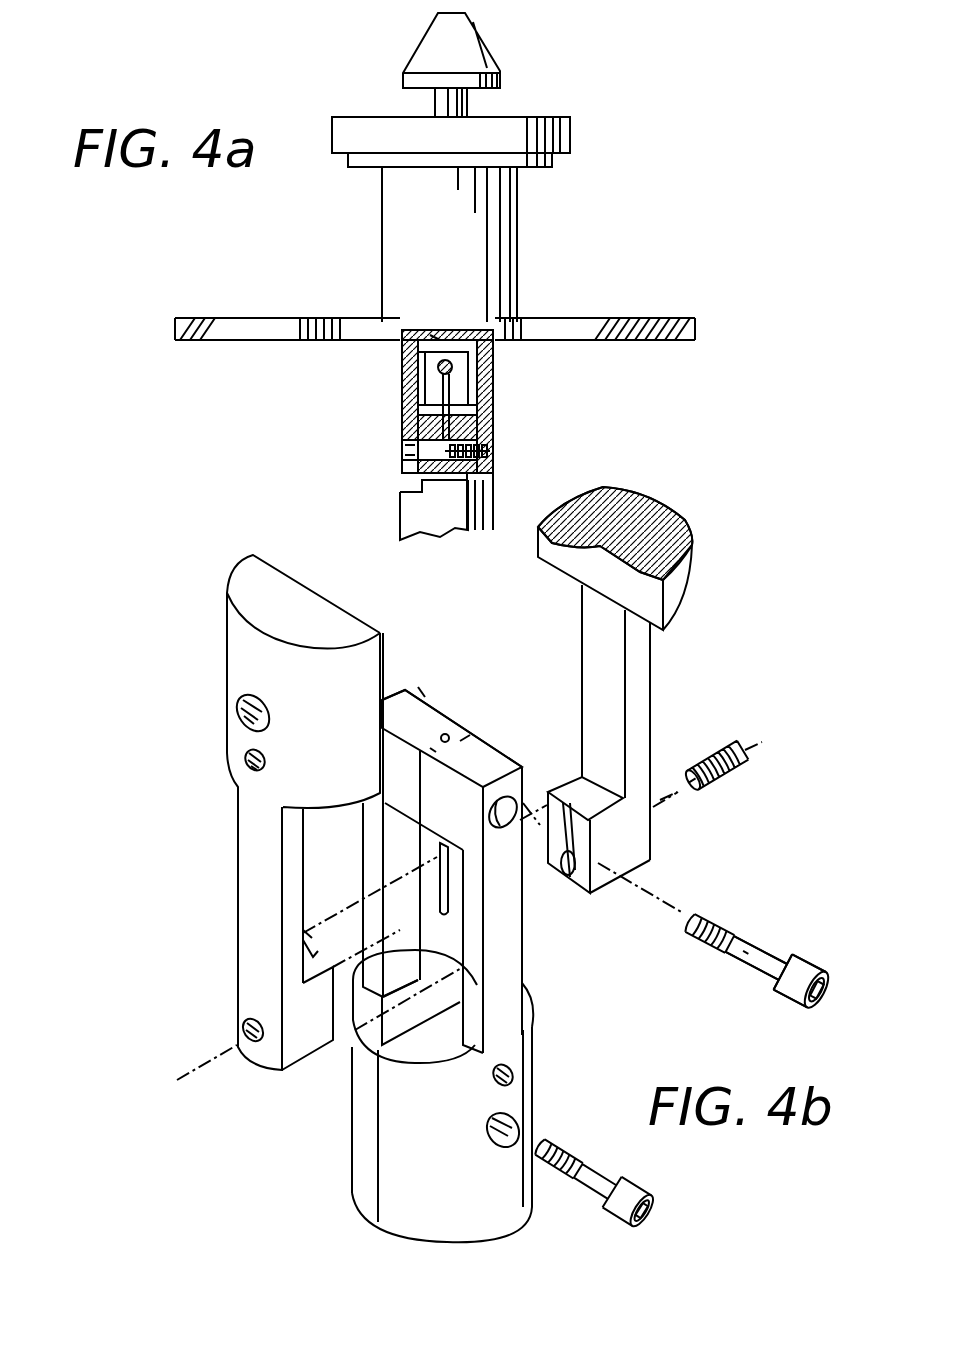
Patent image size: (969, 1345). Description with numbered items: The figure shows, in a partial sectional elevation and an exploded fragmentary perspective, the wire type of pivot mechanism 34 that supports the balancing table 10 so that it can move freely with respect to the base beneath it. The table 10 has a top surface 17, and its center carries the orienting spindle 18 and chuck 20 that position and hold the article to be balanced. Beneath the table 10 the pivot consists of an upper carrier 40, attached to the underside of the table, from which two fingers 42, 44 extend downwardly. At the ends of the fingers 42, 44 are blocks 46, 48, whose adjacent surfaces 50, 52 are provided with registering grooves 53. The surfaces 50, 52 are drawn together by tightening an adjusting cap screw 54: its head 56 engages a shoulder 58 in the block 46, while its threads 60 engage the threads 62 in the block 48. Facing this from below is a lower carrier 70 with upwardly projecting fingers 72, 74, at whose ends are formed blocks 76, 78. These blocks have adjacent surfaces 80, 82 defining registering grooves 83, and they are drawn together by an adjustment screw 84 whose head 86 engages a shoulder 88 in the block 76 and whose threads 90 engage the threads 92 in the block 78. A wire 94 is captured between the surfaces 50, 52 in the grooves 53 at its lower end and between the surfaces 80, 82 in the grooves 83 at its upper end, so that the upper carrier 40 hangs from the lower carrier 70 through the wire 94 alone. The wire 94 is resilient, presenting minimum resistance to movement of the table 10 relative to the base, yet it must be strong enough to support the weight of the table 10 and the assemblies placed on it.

In FIG. 4A, the table 10 is at (580, 322).
In FIG. 4A, the top surface 17 is at (645, 322).
In FIG. 4A, the orienting spindle 18 is at (632, 153).
In FIG. 4A, the chuck 20 is at (480, 40).
In FIG. 4A, the pivot mechanism 34 is at (232, 411).
In FIG. 4B, the pivot mechanism 34 is at (166, 960).
In FIG. 4A, the upper carrier 40 is at (528, 412).
In FIG. 4B, the upper carrier 40 is at (523, 571).
In FIG. 4A, the finger 42 is at (400, 410).
In FIG. 4B, the finger 42 is at (655, 695).
In FIG. 4A, the finger 44 is at (488, 408).
In FIG. 4B, the finger 44 is at (238, 862).
In FIG. 4A, the block 46 is at (423, 480).
In FIG. 4B, the block 46 is at (632, 842).
In FIG. 4A, the block 48 is at (490, 482).
In FIG. 4B, the block 48 is at (298, 1040).
In FIG. 4B, the surface 50 is at (578, 880).
In FIG. 4B, the surface 52 is at (342, 1037).
In FIG. 4B, the grooves 53 is at (313, 957).
In FIG. 4A, the adjusting cap screw 54 is at (338, 462).
In FIG. 4B, the adjusting cap screw 54 is at (773, 767).
In FIG. 4A, the head 56 is at (420, 452).
In FIG. 4A, the shoulder 58 is at (405, 447).
In FIG. 4A, the threads 60 is at (490, 455).
In FIG. 4B, the threads 60 is at (720, 785).
In FIG. 4A, the threads 62 is at (490, 443).
In FIG. 4B, the threads 62 is at (240, 1032).
In FIG. 4A, the lower carrier 70 is at (390, 520).
In FIG. 4B, the lower carrier 70 is at (331, 1175).
In FIG. 4B, the finger 72 is at (515, 995).
In FIG. 4A, the finger 74 is at (432, 478).
In FIG. 4B, the finger 74 is at (368, 846).
In FIG. 4B, the block 76 is at (487, 737).
In FIG. 4A, the block 78 is at (418, 362).
In FIG. 4B, the block 78 is at (440, 670).
In FIG. 4B, the surface 80 is at (430, 748).
In FIG. 4A, the surface 82 is at (432, 380).
In FIG. 4B, the surface 82 is at (470, 735).
In FIG. 4A, the grooves 83 is at (455, 375).
In FIG. 4B, the grooves 83 is at (445, 733).
In FIG. 4A, the adjustment screw 84 is at (455, 368).
In FIG. 4B, the adjustment screw 84 is at (767, 923).
In FIG. 4B, the head 86 is at (815, 982).
In FIG. 4B, the shoulder 88 is at (500, 815).
In FIG. 4B, the threads 90 is at (715, 930).
In FIG. 4A, the threads 92 is at (430, 335).
In FIG. 4A, the wire 94 is at (400, 400).
In FIG. 4B, the wire 94 is at (460, 935).